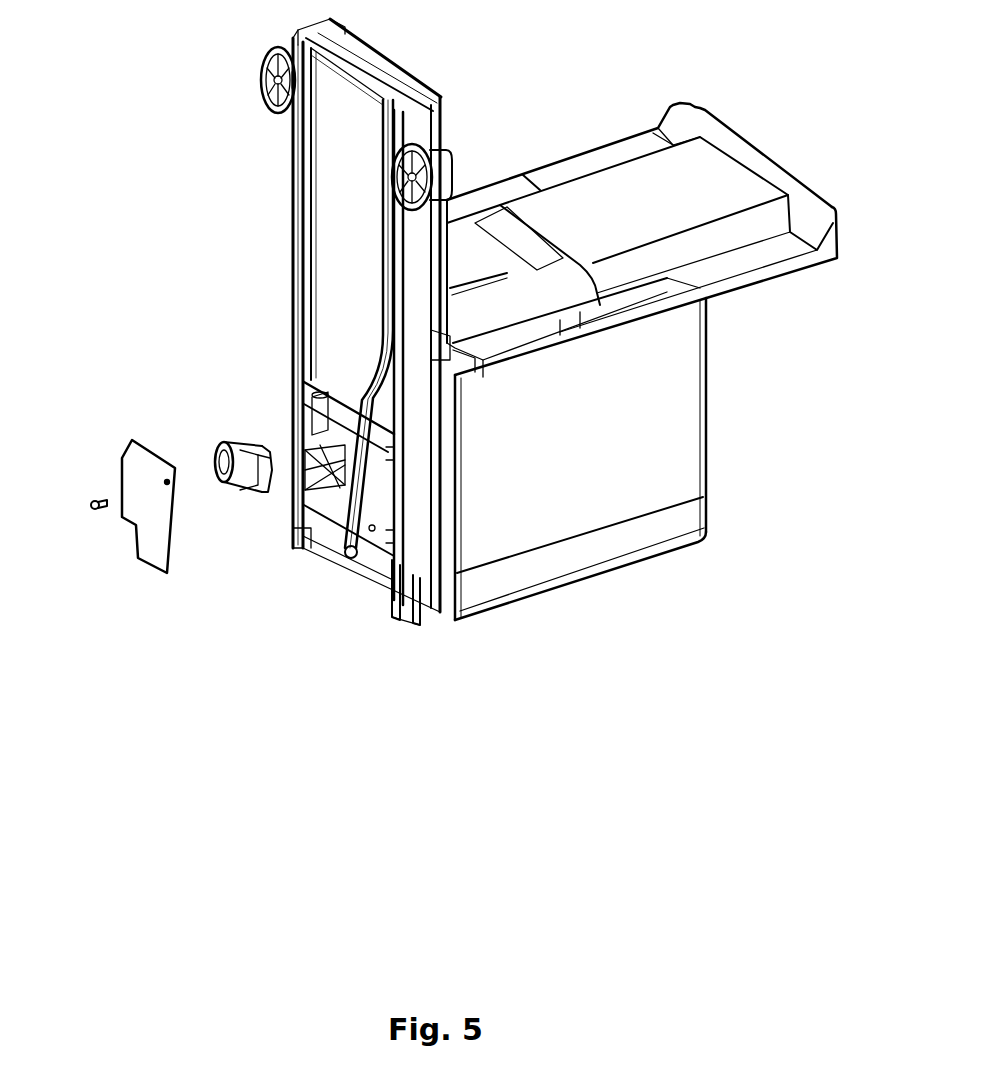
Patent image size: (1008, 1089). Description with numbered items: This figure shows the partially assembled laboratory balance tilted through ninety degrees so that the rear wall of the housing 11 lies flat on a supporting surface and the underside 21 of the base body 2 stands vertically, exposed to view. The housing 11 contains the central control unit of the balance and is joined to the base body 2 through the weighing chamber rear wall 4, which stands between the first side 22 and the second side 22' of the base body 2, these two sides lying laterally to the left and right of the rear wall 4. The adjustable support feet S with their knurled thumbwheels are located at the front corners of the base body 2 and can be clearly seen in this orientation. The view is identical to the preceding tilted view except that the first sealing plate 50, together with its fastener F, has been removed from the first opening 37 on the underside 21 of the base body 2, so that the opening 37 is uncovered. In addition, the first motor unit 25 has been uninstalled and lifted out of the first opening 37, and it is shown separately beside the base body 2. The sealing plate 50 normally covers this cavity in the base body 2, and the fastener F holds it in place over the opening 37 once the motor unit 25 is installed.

The base body 2 is at (420, 587).
The weighing chamber rear wall 4 is at (757, 172).
The housing 11 is at (715, 437).
The underside of the base body 21 is at (335, 237).
The first side 22 is at (243, 492).
The second side 22' is at (410, 611).
The first motor unit 25 is at (195, 435).
The first opening 37 is at (294, 415).
The first sealing plate 50 is at (133, 475).
The fastener F is at (93, 508).
The support feet S is at (260, 60).